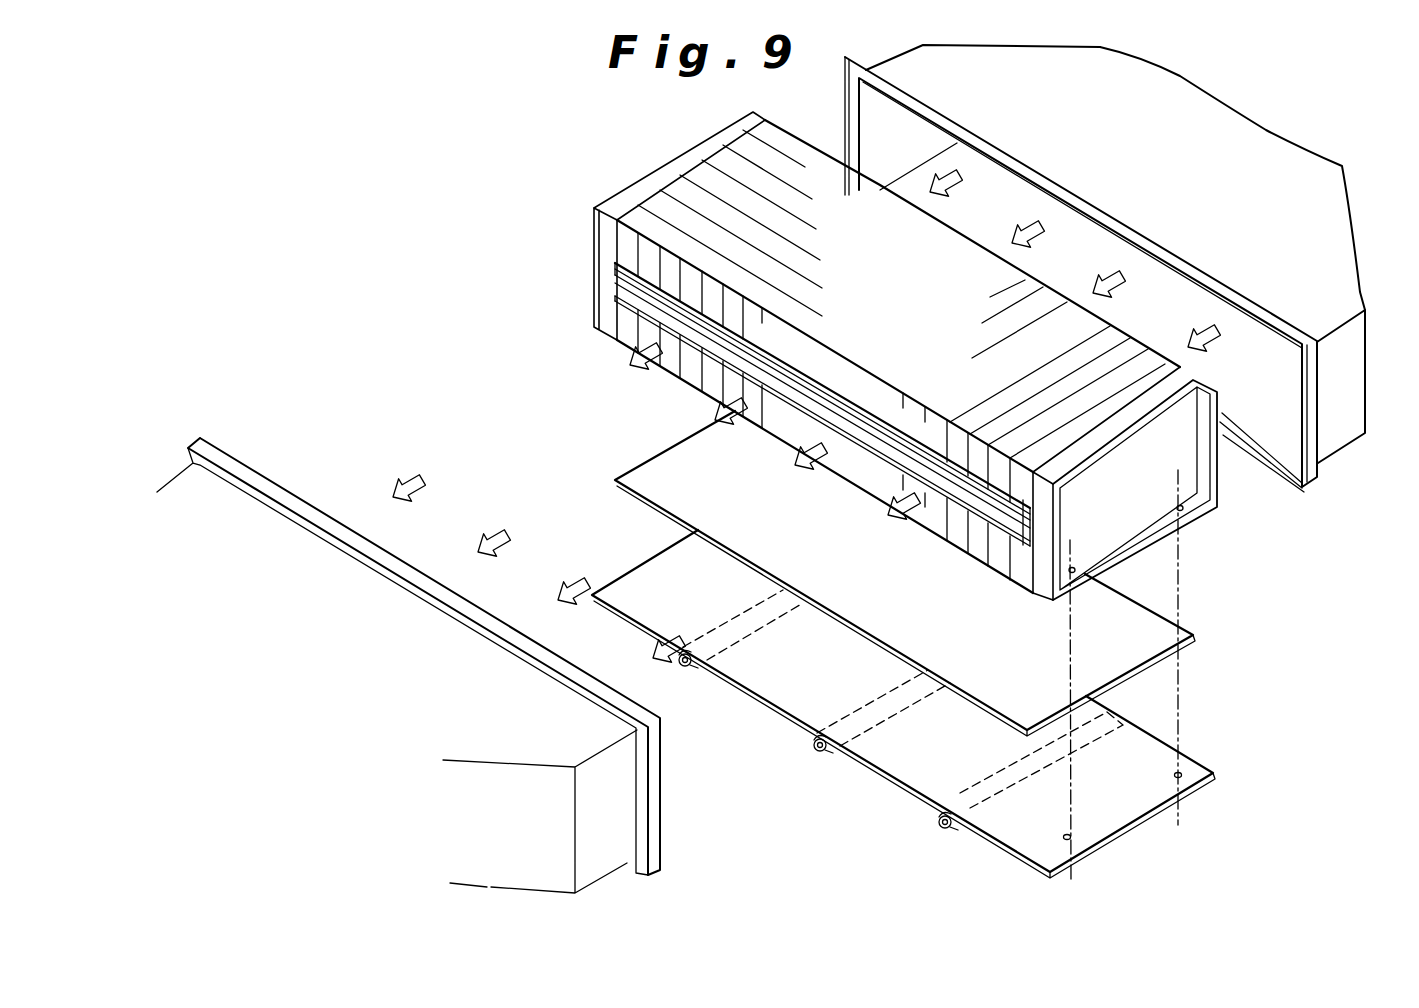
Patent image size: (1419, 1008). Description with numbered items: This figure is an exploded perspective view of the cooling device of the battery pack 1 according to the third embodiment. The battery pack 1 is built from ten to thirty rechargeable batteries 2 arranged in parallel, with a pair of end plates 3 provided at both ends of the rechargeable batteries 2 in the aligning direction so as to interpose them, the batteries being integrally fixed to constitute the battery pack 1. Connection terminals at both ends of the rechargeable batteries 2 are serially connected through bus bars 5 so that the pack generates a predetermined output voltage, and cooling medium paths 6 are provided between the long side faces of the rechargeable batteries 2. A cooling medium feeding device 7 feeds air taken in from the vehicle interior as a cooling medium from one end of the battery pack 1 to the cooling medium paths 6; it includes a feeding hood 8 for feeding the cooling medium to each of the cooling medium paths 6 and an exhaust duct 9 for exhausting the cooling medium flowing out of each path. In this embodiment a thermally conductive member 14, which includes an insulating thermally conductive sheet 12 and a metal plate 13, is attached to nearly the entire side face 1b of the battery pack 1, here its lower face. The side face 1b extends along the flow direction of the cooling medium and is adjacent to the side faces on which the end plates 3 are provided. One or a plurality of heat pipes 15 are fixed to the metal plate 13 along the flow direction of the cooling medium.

The battery pack 1 is at (883, 350).
The side face 1b is at (690, 378).
The rechargeable batteries 2 is at (733, 227).
The end plates 3 is at (1128, 498).
The bus bars 5 is at (628, 293).
The cooling medium paths 6 is at (797, 192).
The cooling medium feeding device 7 is at (1373, 378).
The feeding hood 8 is at (1348, 465).
The exhaust duct 9 is at (240, 520).
The insulating thermally conductive sheet 12 is at (840, 595).
The metal plate 13 is at (805, 692).
The thermally conductive member 14 is at (903, 644).
The heat pipes 15 is at (686, 668).